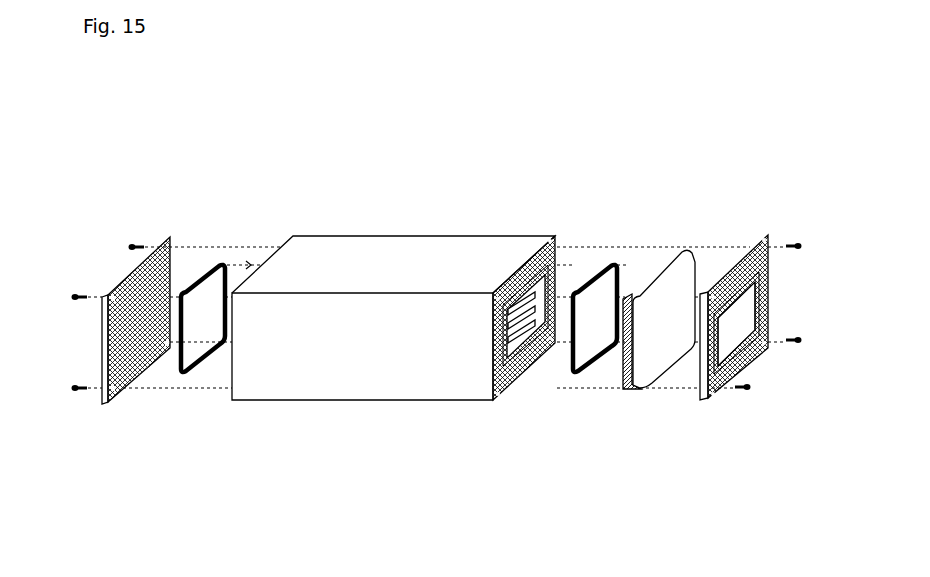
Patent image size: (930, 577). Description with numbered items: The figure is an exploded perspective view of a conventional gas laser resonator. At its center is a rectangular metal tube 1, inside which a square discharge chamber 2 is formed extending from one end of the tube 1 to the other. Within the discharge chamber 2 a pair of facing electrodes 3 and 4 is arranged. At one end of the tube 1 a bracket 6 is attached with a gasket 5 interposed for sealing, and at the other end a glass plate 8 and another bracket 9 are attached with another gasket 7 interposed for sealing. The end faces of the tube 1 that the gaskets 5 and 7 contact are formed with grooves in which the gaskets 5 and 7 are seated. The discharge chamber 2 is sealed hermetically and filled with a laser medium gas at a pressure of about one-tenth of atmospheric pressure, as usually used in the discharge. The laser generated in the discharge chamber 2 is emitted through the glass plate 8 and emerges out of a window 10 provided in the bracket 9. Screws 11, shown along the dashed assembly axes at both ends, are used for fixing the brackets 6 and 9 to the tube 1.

The rectangular metal tube 1 is at (363, 241).
The discharge chamber 2 is at (517, 350).
The electrode 3 is at (517, 305).
The electrode 4 is at (525, 330).
The gasket 5 is at (222, 263).
The bracket 6 is at (122, 293).
The gasket 7 is at (590, 283).
The glass plate 8 is at (688, 258).
The bracket 9 is at (755, 243).
The window 10 is at (737, 323).
The screws 11 is at (80, 393).